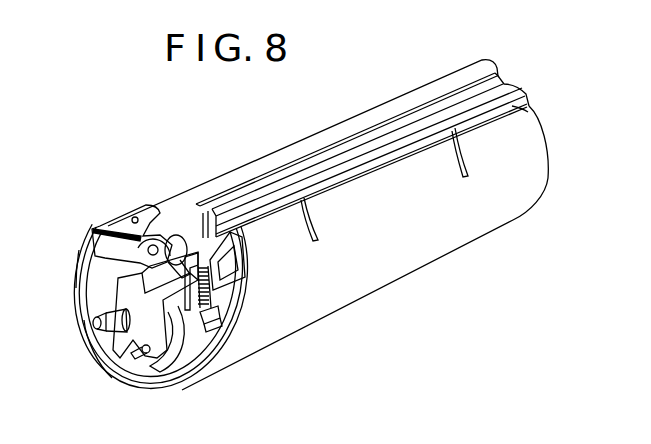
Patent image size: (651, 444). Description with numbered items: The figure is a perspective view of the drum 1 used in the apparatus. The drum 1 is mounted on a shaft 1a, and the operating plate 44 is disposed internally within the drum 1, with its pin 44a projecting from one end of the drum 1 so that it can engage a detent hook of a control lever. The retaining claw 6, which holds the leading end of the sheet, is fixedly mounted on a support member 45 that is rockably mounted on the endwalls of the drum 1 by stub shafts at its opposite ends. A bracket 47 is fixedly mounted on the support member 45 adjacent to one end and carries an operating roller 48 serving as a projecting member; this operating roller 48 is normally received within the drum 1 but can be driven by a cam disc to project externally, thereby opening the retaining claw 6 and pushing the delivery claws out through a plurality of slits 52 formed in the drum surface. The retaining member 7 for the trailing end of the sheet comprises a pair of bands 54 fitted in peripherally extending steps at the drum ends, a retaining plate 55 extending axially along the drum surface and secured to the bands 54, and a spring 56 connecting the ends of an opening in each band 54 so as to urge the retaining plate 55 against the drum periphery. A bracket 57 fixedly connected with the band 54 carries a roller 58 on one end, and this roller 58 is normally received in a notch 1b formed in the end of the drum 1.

The drum 1 is at (418, 280).
The shaft 1a is at (93, 327).
The notch 1b is at (187, 312).
The retaining claw 6 is at (505, 104).
The retaining member 7 is at (104, 216).
The operating plate 44 is at (117, 347).
The pin 44a is at (145, 352).
The support member 45 is at (503, 82).
The bracket 47 is at (229, 271).
The operating roller 48 is at (240, 251).
The slits 52 is at (466, 155).
The bands 54 is at (141, 212).
The retaining plate 55 is at (293, 146).
The spring 56 is at (233, 307).
The bracket 57 is at (96, 248).
The roller 58 is at (168, 226).